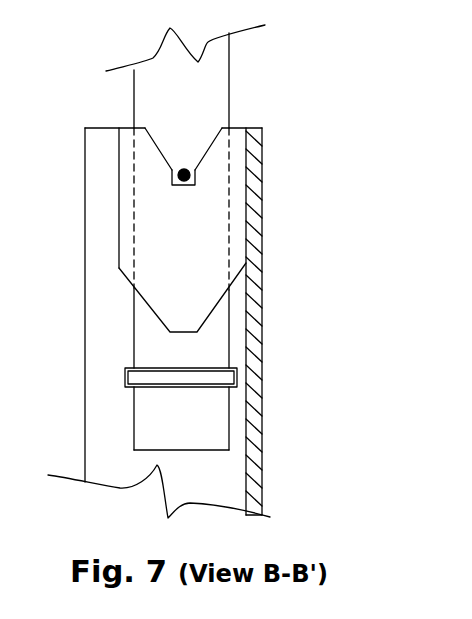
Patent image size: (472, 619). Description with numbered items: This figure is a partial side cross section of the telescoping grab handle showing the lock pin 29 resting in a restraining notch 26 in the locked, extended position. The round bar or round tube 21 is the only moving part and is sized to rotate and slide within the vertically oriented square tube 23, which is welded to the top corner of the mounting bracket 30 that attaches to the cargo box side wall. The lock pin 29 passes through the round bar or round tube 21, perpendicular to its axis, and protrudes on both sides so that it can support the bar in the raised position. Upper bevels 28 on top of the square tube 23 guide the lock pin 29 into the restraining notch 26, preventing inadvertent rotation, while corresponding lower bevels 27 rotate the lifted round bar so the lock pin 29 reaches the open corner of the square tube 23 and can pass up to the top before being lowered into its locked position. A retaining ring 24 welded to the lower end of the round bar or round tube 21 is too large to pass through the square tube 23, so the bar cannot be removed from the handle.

The round bar or round tube 21 is at (230, 80).
The square tube 23 is at (112, 187).
The lock pin 29 is at (184, 163).
The upper bevels 28 is at (205, 157).
The restraining notch 26 is at (187, 190).
The lower bevels 27 is at (202, 317).
The retaining ring 24 is at (180, 390).
The mounting bracket 30 is at (85, 415).